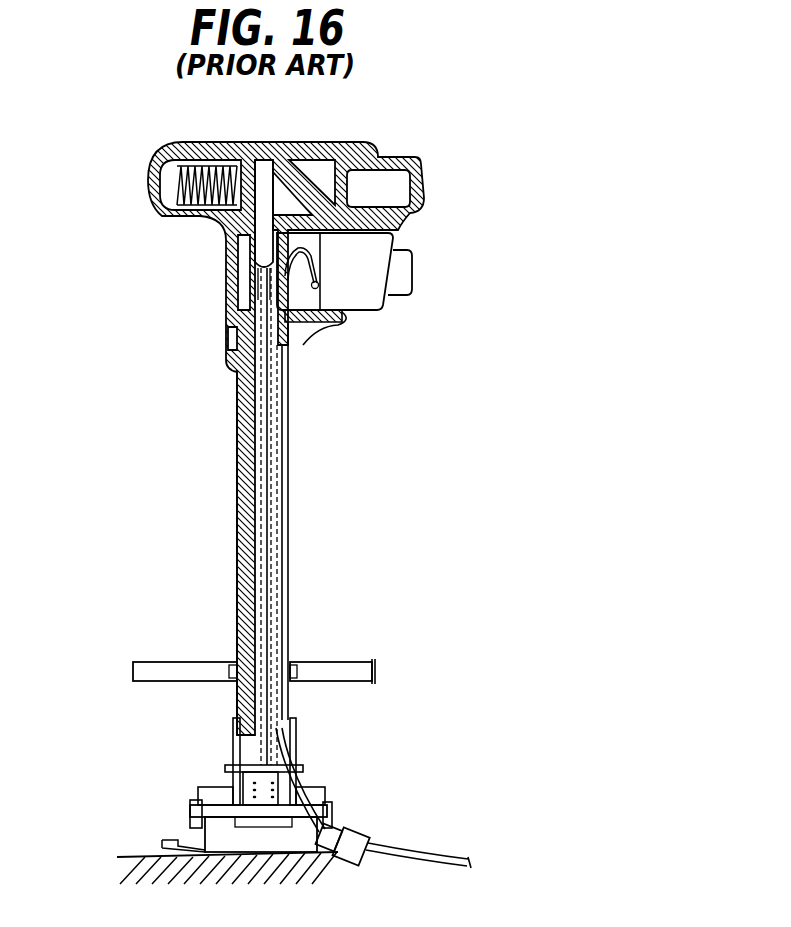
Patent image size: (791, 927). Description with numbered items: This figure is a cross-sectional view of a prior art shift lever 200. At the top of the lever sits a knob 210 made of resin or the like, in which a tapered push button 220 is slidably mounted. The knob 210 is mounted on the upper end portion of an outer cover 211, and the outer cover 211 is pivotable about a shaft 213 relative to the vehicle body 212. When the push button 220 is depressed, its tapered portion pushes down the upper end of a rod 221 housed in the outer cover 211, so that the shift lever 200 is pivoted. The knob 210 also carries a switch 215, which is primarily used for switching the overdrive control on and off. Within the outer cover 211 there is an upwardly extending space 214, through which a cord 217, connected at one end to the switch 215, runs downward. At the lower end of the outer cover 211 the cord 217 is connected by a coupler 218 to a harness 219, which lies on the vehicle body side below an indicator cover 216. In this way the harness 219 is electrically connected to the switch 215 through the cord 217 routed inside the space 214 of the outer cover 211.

The shift lever 200 is at (126, 226).
The knob 210 is at (353, 139).
The outer cover 211 is at (235, 489).
The vehicle body 212 is at (134, 850).
The shaft 213 is at (216, 799).
The space 214 is at (297, 459).
The switch 215 is at (418, 270).
The indicator cover 216 is at (338, 662).
The cord 217 is at (301, 760).
The coupler 218 is at (353, 826).
The harness 219 is at (434, 851).
The push button 220 is at (421, 152).
The rod 221 is at (266, 192).